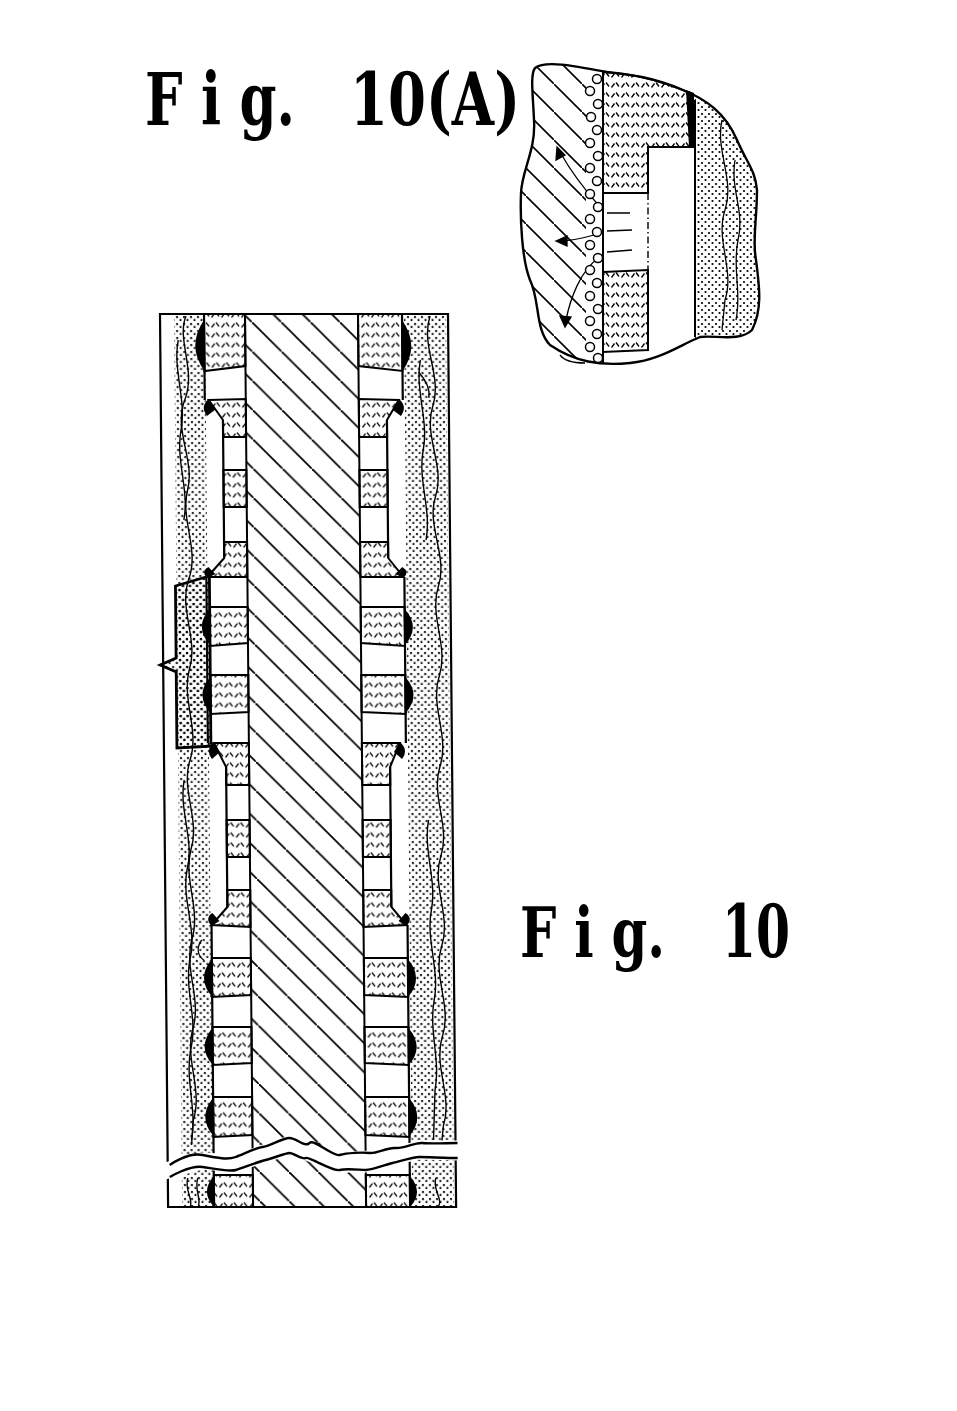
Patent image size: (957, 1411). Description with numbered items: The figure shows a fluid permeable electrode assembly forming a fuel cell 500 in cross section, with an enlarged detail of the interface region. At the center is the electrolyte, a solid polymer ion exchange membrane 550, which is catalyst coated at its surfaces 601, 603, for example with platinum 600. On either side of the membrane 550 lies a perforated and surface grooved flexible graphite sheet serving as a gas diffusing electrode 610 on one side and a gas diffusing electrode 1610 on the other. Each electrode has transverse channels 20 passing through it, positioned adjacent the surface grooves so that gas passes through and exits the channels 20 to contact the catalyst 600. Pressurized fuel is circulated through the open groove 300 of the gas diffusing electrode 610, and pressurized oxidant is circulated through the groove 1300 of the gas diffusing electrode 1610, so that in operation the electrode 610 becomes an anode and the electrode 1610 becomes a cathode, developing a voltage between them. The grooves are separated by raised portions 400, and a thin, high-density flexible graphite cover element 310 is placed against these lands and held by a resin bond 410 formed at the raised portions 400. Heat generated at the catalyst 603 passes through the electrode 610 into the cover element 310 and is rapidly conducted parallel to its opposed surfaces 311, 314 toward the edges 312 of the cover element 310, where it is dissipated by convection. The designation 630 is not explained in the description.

In FIG. 10, the transverse channels 20 is at (210, 383).
In FIG. 10A, the transverse channels 20 is at (637, 210).
In FIG. 10, the open groove 300 is at (397, 483).
In FIG. 10A, the open groove 300 is at (667, 320).
In FIG. 10, the cover element 310 is at (165, 822).
In FIG. 10A, the cover element 310 is at (725, 185).
In FIG. 10, the opposed surface of cover element 311 is at (160, 566).
In FIG. 10, the edges of cover element 312 is at (435, 312).
In FIG. 10, the opposed surface of cover element 314 is at (434, 390).
In FIG. 10, the raised portions 400 is at (156, 665).
In FIG. 10, the bond 410 is at (198, 331).
In FIG. 10A, the bond 410 is at (697, 117).
In FIG. 10, the fuel cell 500 is at (253, 306).
In FIG. 10, the solid polymer ion exchange membrane 550 is at (290, 312).
In FIG. 10A, the solid polymer ion exchange membrane 550 is at (553, 63).
In FIG. 10A, the platinum catalyst 600 is at (572, 340).
In FIG. 10, the catalyst coated surface of membrane 601 is at (247, 312).
In FIG. 10, the catalyst coated surface of membrane 603 is at (347, 312).
In FIG. 10A, the catalyst coated surface of membrane 603 is at (597, 72).
In FIG. 10, the gas diffusing electrode 610 is at (373, 320).
In FIG. 10A, the gas diffusing electrode 610 is at (673, 105).
In FIG. 10, the electrode stack 630 is at (393, 310).
In FIG. 10, the groove of cathode electrode 1300 is at (212, 447).
In FIG. 10, the gas diffusing electrode 1610 is at (220, 312).